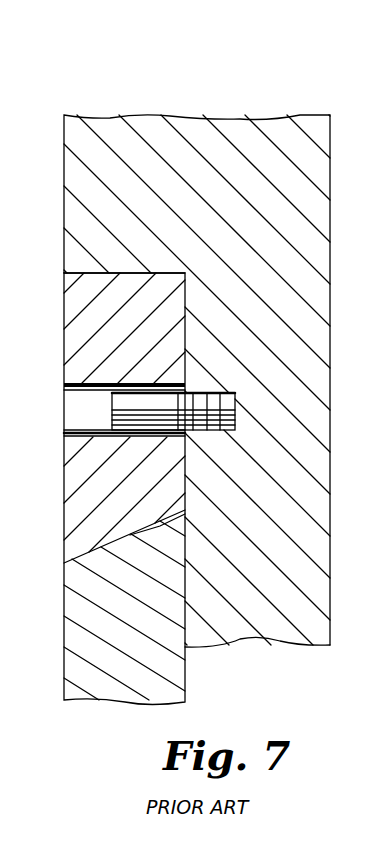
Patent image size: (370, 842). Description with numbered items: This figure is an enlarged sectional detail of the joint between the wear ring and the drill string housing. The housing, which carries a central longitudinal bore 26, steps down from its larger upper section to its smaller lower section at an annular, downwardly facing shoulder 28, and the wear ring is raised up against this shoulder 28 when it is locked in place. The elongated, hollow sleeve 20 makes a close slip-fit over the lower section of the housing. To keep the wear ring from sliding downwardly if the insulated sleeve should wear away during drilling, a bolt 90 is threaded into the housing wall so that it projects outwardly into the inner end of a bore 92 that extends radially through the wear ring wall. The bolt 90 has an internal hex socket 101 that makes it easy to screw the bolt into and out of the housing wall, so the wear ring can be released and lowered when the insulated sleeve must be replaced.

The central longitudinal bore 26 is at (64, 228).
The shoulder 28 is at (140, 274).
The sleeve 20 is at (64, 567).
The bolt 90 is at (110, 395).
The bore 92 is at (77, 436).
The internal hex socket 101 is at (123, 404).